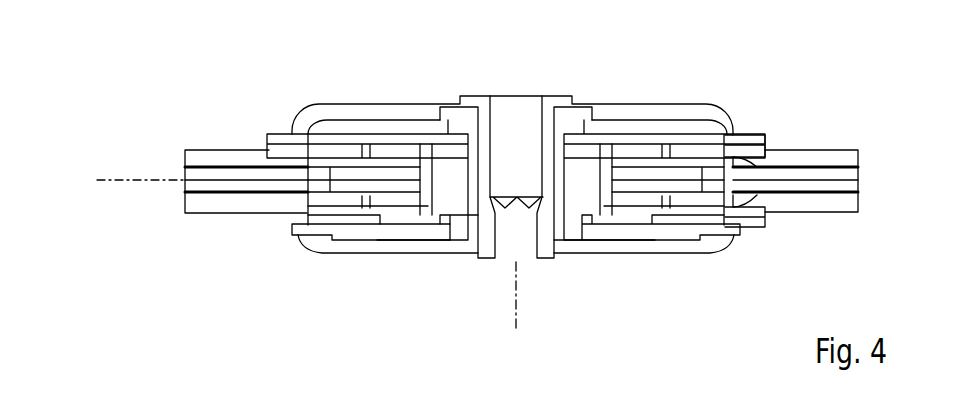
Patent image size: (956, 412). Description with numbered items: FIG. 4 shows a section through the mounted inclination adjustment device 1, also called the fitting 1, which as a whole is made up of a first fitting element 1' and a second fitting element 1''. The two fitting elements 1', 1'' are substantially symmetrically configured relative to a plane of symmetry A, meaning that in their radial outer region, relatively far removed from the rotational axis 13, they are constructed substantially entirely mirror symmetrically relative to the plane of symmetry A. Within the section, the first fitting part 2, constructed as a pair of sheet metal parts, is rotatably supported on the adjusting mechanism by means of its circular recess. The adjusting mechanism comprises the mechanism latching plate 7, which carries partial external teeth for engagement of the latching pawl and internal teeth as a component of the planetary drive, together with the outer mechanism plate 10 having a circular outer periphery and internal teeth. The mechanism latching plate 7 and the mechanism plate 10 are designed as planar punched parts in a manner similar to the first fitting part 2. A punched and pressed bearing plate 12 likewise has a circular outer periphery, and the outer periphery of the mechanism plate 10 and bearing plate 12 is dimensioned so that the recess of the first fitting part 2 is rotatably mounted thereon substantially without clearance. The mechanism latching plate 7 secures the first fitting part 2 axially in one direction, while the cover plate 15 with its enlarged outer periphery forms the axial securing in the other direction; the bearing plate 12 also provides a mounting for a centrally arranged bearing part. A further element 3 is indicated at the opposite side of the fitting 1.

The inclination adjustment device and/or fitting 1 is at (513, 228).
The first fitting element 1' is at (117, 226).
The second fitting element 1'' is at (116, 137).
The first fitting part 2 is at (288, 216).
The cable 3 is at (870, 170).
The mechanism latching plate 7 is at (305, 202).
The mechanism plate 10 is at (340, 209).
The bearing plate 12 is at (378, 216).
The rotational axis 13 is at (515, 309).
The cover plate 15 is at (425, 235).
The plane of symmetry A is at (110, 178).